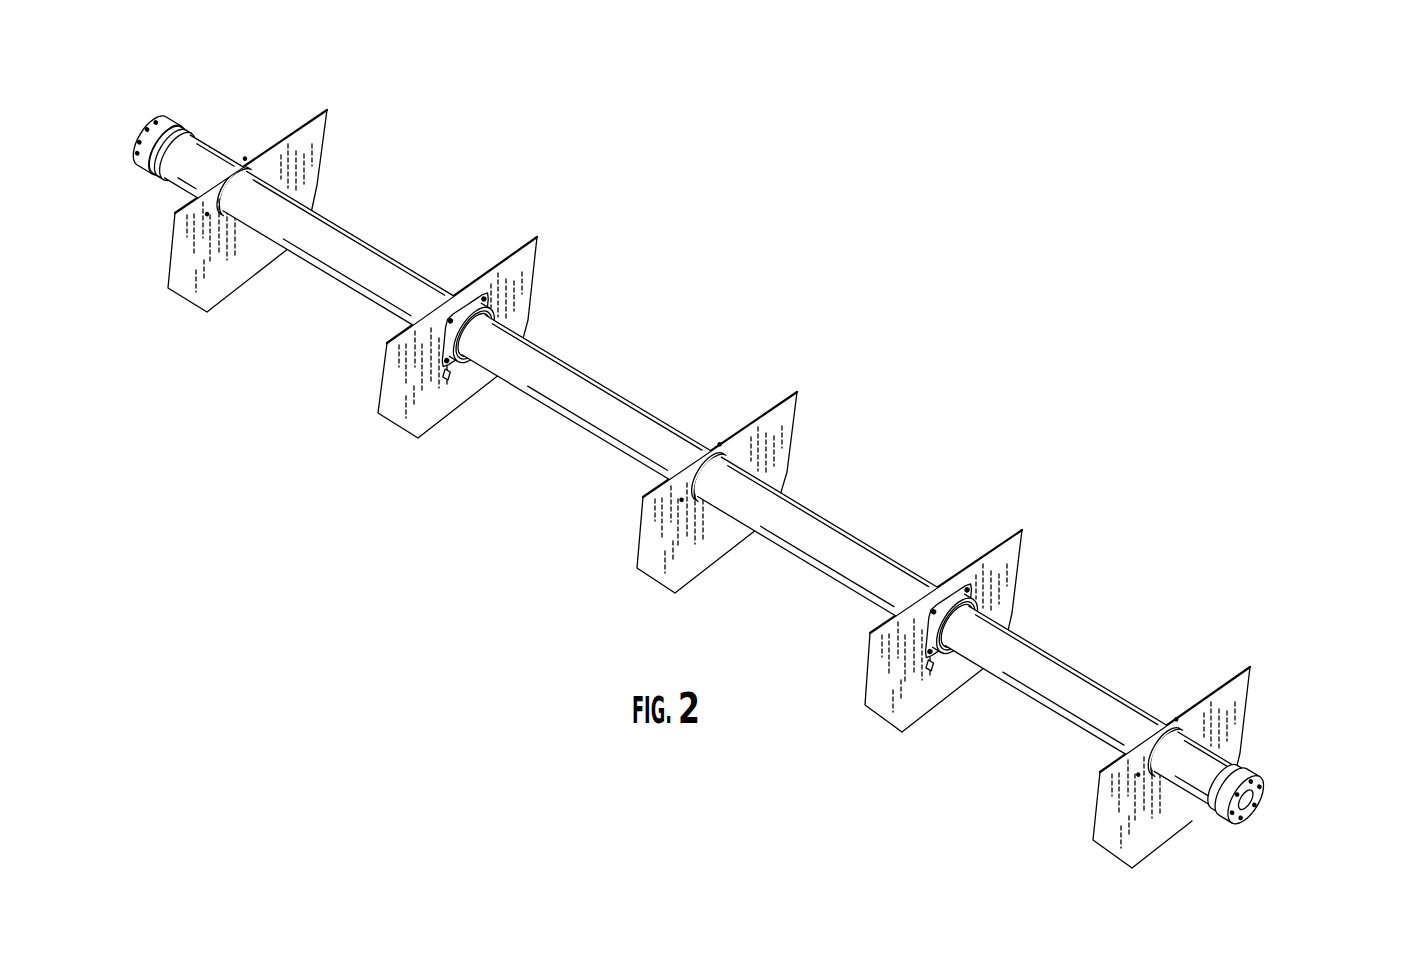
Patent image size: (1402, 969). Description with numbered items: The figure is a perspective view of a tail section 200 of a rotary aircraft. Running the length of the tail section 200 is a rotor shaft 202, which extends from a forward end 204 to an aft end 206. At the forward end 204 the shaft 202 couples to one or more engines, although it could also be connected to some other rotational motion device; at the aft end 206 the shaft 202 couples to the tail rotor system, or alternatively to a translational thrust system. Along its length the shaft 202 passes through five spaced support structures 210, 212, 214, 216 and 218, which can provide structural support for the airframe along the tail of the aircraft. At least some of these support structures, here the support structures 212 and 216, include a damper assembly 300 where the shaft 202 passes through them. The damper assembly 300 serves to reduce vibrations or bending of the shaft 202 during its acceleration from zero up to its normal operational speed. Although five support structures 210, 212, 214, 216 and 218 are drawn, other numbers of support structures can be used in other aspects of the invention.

The tail section 200 is at (735, 457).
The rotor shaft 202 is at (728, 489).
The forward end 204 is at (159, 122).
The aft end 206 is at (1298, 763).
The support structure 210 is at (283, 182).
The support structure 212 is at (464, 291).
The support structure 214 is at (731, 440).
The support structure 216 is at (964, 576).
The support structure 218 is at (1184, 725).
The damper assembly 300 is at (706, 538).